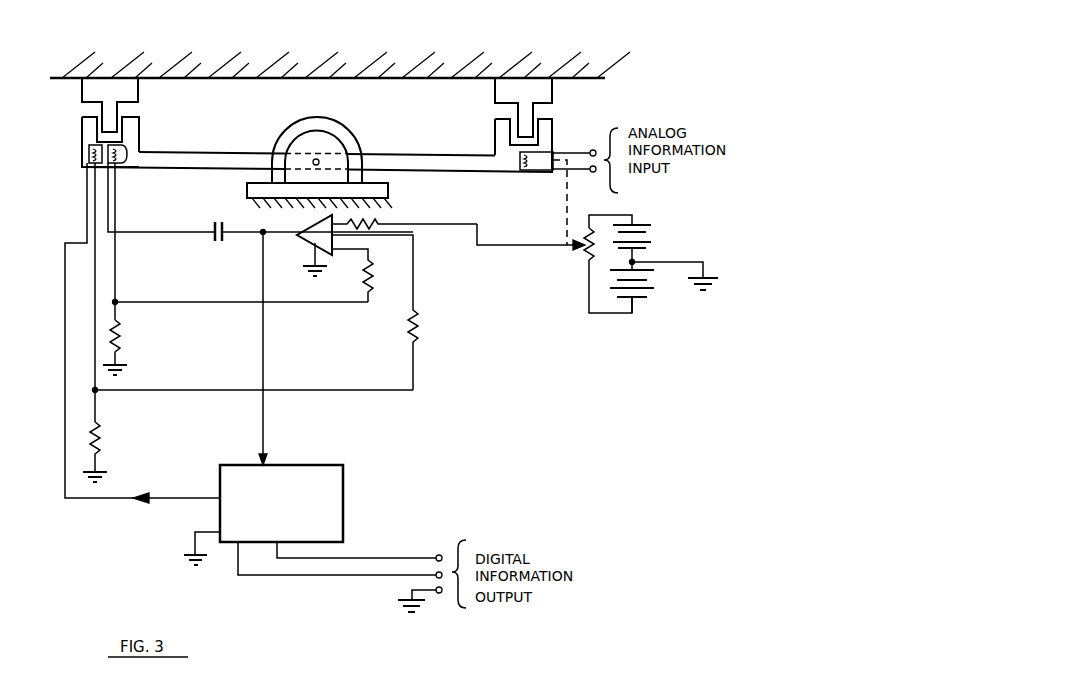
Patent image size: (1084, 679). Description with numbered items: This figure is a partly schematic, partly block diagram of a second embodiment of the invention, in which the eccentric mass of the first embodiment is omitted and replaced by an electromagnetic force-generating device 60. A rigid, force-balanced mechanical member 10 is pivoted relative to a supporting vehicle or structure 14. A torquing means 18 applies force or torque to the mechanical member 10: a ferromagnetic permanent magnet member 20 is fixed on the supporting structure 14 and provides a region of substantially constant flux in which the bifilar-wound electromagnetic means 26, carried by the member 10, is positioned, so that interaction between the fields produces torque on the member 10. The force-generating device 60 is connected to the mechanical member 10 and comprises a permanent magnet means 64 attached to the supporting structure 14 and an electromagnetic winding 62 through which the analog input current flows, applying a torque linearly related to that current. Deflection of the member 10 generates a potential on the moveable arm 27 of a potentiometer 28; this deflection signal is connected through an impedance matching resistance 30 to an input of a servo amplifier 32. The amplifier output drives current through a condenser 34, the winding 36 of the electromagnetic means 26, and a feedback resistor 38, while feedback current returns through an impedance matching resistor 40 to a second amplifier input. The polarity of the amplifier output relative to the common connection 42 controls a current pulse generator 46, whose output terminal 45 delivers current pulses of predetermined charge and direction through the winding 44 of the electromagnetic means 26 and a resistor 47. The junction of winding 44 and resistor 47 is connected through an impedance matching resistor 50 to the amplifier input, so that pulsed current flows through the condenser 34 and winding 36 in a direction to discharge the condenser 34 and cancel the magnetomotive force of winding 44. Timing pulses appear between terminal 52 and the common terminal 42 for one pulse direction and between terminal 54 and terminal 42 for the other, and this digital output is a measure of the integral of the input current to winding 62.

The supporting structure 14 is at (316, 58).
The torquing means 18 is at (76, 118).
The permanent magnet member 20 is at (113, 112).
The winding 36 is at (122, 147).
The winding 44 is at (92, 153).
The electromagnetic means 26 is at (128, 168).
The mechanical member 10 is at (397, 163).
The condenser 34 is at (229, 211).
The servo amplifier 32 is at (314, 240).
The impedance matching resistance 30 is at (376, 223).
The impedance matching resistor 40 is at (371, 281).
The impedance matching resistor 50 is at (418, 318).
The feedback resistor 38 is at (121, 342).
The resistor 47 is at (100, 431).
The output terminal 45 is at (154, 497).
The current pulse generator 46 is at (315, 475).
The terminal 52 is at (360, 556).
The terminal 54 is at (350, 579).
The common connection 42 is at (436, 594).
The permanent magnet means 64 is at (525, 120).
The electromagnetic force-generating device 60 is at (566, 141).
The electromagnetic winding 62 is at (520, 170).
The moveable arm 27 is at (527, 254).
The potentiometer 28 is at (585, 259).